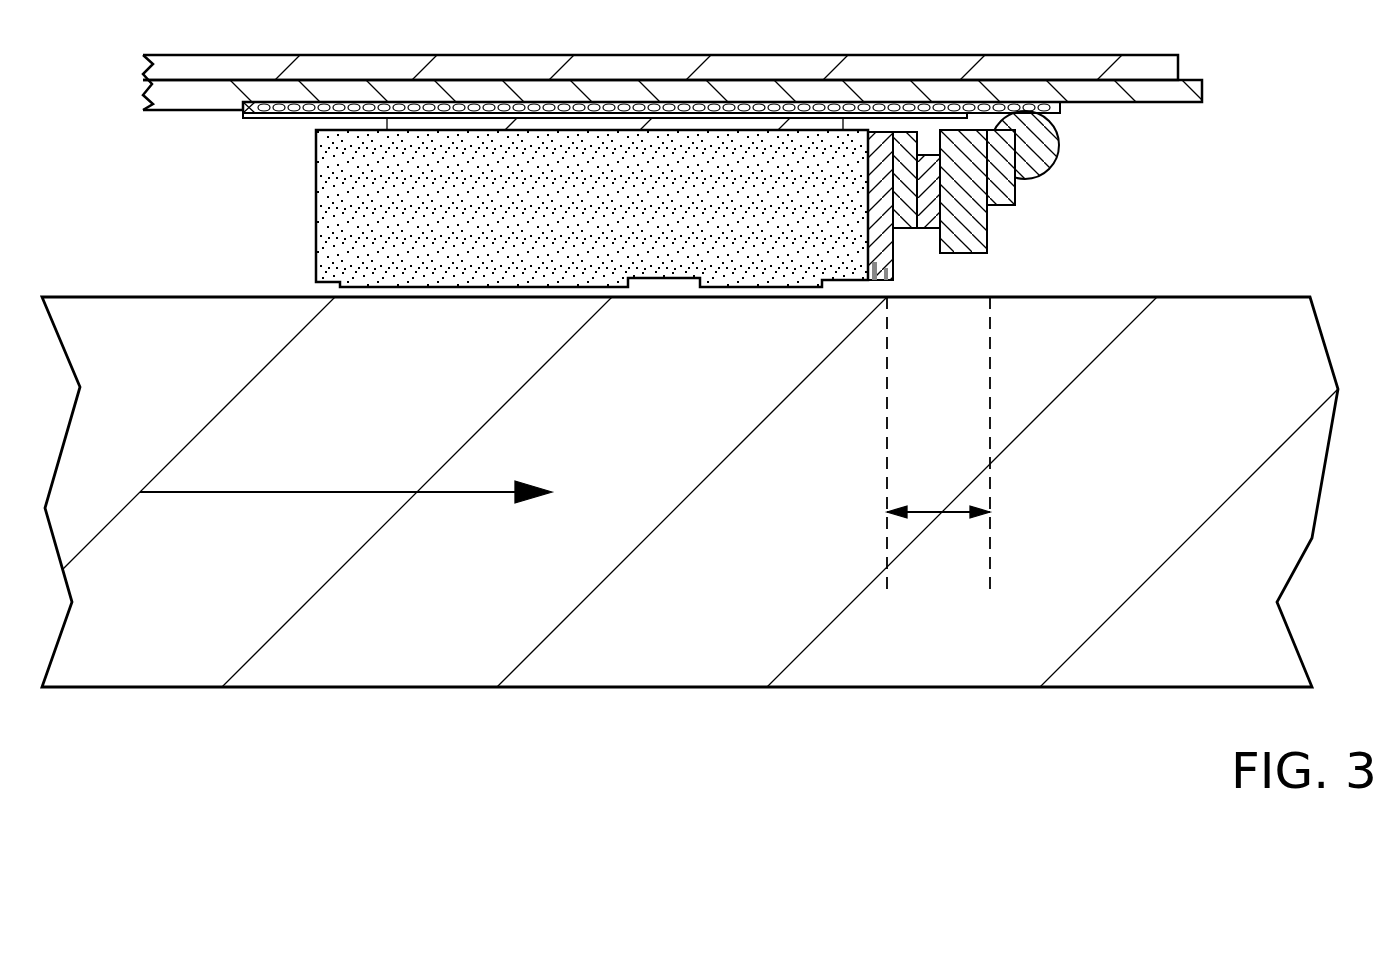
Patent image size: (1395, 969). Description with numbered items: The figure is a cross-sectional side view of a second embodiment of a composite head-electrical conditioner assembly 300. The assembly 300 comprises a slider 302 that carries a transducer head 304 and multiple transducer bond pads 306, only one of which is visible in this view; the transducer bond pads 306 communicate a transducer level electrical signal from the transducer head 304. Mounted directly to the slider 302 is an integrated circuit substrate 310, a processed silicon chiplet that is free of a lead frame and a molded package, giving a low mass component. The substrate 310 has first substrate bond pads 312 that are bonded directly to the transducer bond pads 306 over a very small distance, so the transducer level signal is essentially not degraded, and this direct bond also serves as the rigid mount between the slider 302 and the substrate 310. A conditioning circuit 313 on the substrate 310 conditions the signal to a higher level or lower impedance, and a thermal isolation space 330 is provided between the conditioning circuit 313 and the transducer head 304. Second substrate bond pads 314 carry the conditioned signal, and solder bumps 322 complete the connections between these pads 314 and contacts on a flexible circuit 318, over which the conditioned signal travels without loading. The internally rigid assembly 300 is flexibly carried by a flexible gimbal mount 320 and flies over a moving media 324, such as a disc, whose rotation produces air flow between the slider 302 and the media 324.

The composite head-electrical conditioner assembly 300 is at (1257, 137).
The slider 302 is at (607, 222).
The transducer head 304 is at (887, 282).
The transducer bond pads 306 is at (903, 228).
The integrated circuit substrate 310 is at (970, 253).
The first substrate bond pads 312 is at (933, 228).
The conditioning circuit 313 is at (987, 228).
The second substrate bond pads 314 is at (1013, 203).
The flexible circuit 318 is at (1062, 110).
The flexible gimbal mount 320 is at (1257, 70).
The solder bumps 322 is at (1060, 150).
The moving media 324 is at (677, 350).
The thermal isolation space 330 is at (928, 512).